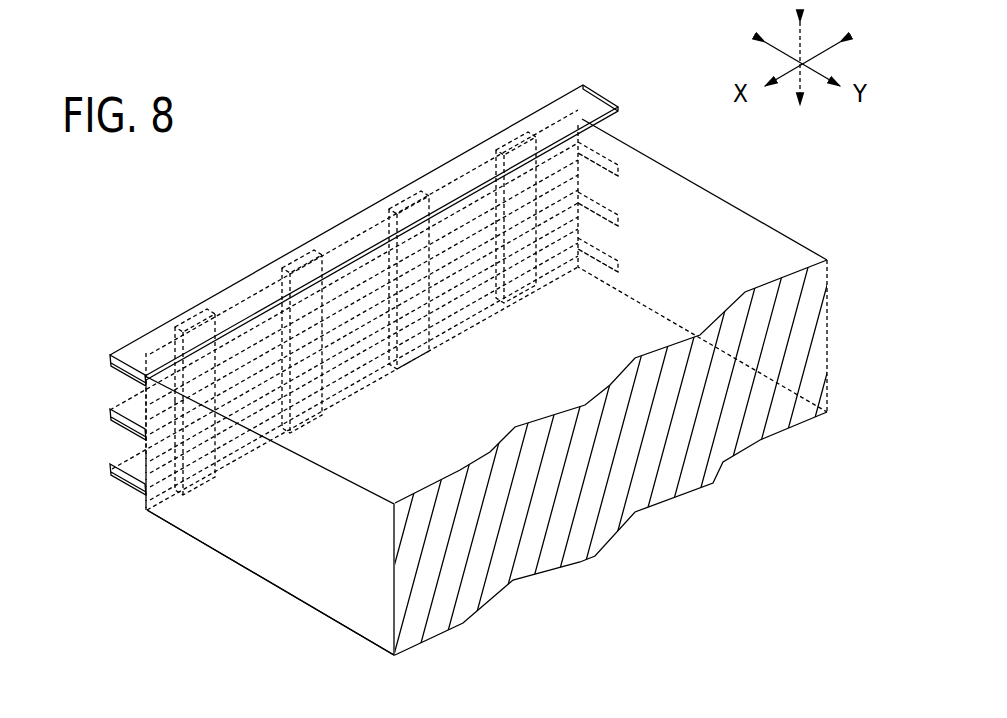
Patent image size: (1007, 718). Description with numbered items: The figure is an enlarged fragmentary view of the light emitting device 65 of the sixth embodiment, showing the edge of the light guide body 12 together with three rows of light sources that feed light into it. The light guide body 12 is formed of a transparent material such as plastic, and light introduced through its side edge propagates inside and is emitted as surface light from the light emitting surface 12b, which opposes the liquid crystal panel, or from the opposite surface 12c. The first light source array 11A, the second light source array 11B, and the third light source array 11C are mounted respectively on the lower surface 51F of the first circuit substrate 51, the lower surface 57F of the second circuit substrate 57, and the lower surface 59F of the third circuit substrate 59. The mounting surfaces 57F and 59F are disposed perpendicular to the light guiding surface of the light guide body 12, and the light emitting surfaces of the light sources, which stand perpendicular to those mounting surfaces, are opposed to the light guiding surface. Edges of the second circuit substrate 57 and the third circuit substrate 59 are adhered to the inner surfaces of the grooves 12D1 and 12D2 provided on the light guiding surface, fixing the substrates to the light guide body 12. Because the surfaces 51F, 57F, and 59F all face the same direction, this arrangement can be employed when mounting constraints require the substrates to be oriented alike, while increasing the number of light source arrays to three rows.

The light guide body 12 is at (273, 535).
The light emitting surface 12b is at (705, 203).
The surface opposite the light emitting surface 12c is at (291, 600).
The groove 12D1 is at (143, 405).
The groove 12D2 is at (148, 516).
The light emitting device 65 is at (345, 177).
The first light source array 11A is at (186, 305).
The second light source array 11B is at (229, 370).
The third light source array 11C is at (207, 480).
The first circuit substrate 51 is at (133, 348).
The lower surface of the first circuit substrate 51F is at (110, 366).
The second circuit substrate 57 is at (112, 403).
The lower surface of the second circuit substrate 57F is at (127, 431).
The third circuit substrate 59 is at (112, 464).
The lower surface of the third circuit substrate 59F is at (128, 489).